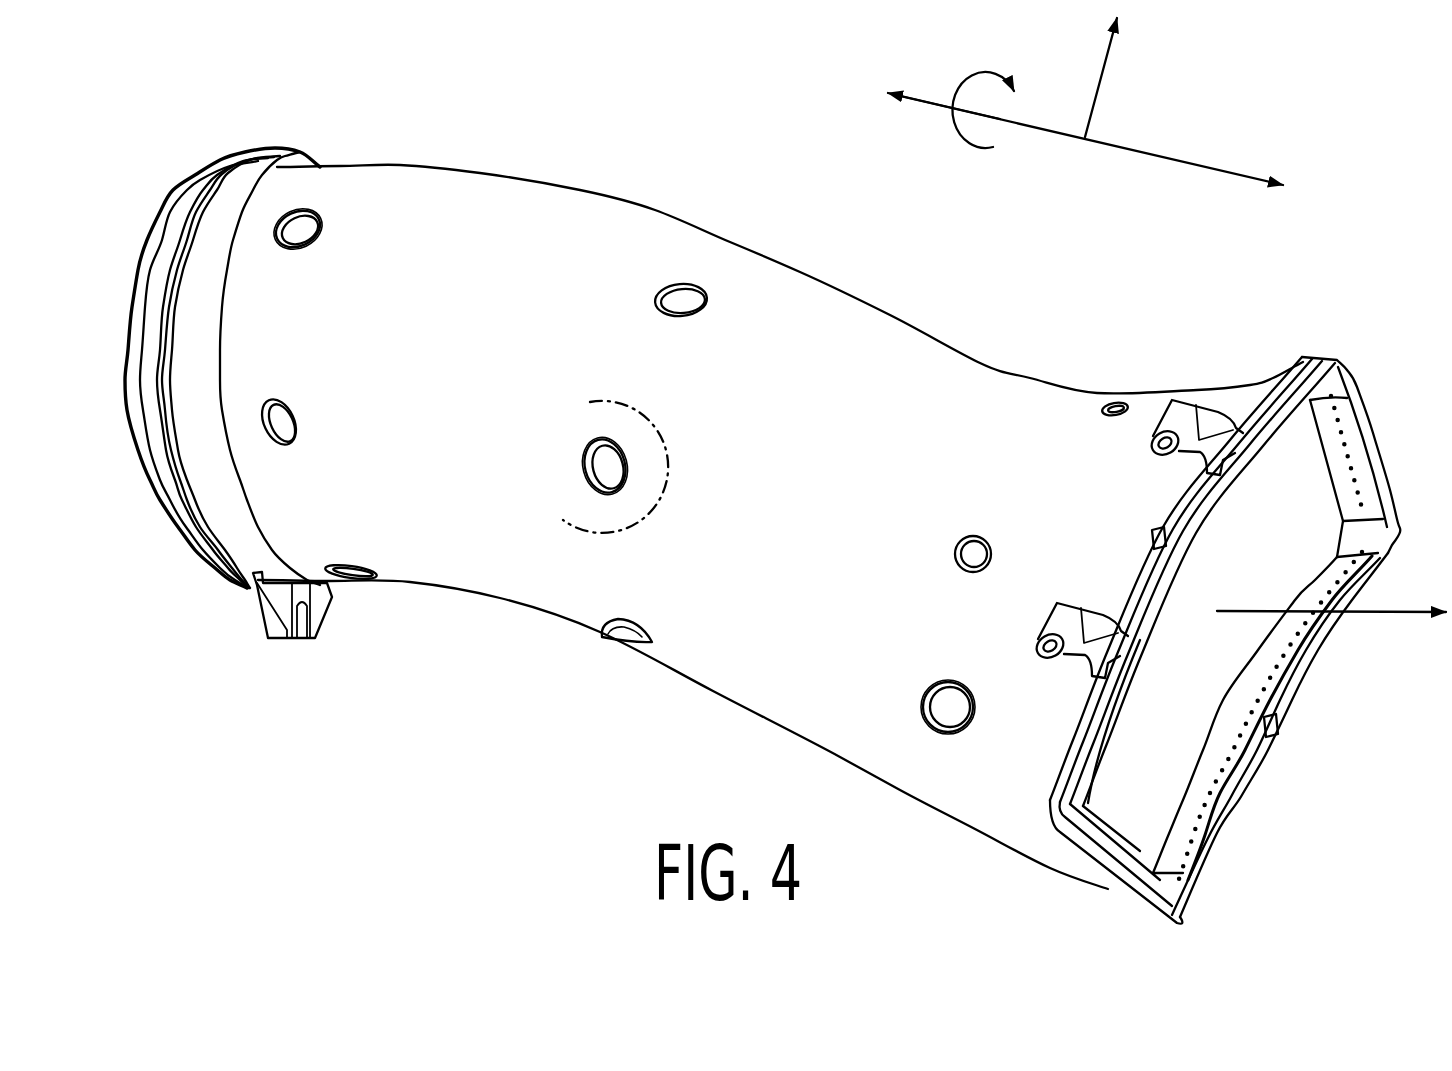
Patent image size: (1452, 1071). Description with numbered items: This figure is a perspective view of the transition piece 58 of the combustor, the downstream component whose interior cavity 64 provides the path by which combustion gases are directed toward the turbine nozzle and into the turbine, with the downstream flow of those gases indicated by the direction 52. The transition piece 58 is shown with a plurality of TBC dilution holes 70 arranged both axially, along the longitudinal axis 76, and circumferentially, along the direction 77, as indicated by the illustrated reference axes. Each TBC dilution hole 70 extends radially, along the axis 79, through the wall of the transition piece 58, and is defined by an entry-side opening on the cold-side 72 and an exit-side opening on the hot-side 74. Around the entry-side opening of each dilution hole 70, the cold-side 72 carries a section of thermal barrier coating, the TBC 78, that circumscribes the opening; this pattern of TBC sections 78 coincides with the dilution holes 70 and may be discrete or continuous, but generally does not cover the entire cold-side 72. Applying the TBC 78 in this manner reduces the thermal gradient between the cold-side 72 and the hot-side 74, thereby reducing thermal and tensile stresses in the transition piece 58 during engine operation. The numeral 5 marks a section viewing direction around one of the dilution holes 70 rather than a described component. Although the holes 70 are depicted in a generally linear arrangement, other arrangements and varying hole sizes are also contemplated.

The transition piece 58 is at (782, 192).
The TBC dilution holes 70 is at (300, 230).
The cold-side 72 is at (873, 350).
The TBC section 78 is at (284, 256).
The section view direction 5 is at (584, 403).
The circumferential direction 77 is at (957, 82).
The longitudinal axis 76 is at (1187, 163).
The radial axis 79 is at (1105, 88).
The interior cavity 64 is at (1257, 538).
The hot-side 74 is at (1145, 798).
The downstream direction 52 is at (1380, 614).